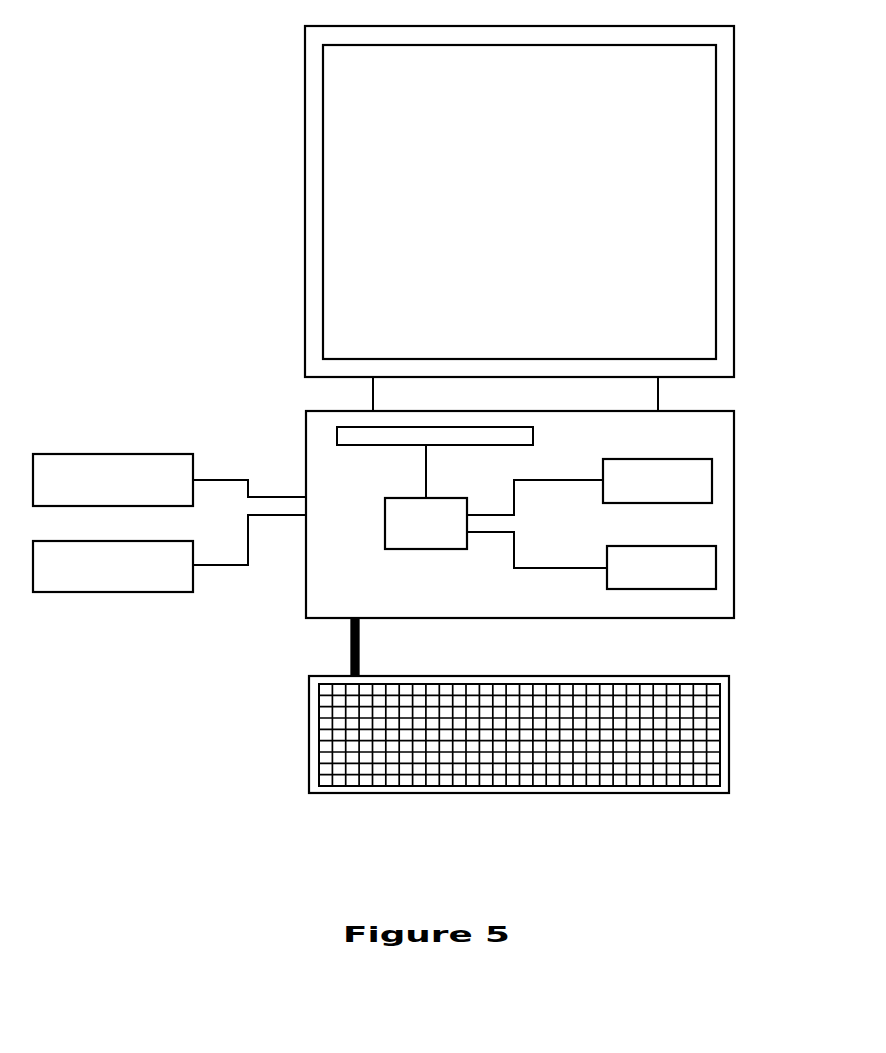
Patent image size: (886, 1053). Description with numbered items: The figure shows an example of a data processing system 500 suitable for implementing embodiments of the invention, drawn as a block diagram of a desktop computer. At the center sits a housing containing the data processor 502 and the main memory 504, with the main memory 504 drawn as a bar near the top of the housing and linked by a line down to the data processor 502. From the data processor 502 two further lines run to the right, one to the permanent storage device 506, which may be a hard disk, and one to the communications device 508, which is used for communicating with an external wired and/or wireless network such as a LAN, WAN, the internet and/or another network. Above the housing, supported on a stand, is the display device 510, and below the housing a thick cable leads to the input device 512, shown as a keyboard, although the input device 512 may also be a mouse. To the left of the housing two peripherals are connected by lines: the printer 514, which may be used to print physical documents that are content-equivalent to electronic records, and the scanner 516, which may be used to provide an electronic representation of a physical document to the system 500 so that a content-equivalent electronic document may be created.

The data processing system 500 is at (142, 115).
The data processor 502 is at (385, 517).
The main memory 504 is at (340, 432).
The permanent storage device 506 is at (712, 481).
The communications device 508 is at (716, 568).
The display device 510 is at (734, 175).
The input device 512 is at (729, 733).
The printer 514 is at (100, 454).
The scanner 516 is at (106, 592).